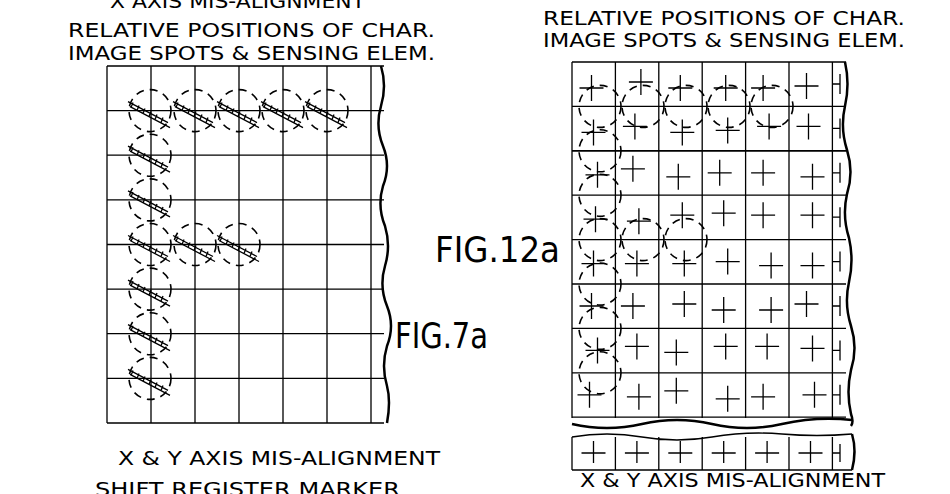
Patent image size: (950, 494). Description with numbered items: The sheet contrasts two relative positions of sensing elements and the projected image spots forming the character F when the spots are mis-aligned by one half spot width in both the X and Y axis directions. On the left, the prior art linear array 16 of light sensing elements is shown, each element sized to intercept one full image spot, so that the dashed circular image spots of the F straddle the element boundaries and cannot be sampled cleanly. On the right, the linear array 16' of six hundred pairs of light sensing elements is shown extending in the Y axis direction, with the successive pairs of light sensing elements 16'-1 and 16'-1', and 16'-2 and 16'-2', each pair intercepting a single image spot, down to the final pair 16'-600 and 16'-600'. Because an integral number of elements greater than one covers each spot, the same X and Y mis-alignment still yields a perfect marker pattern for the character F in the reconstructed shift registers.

In FIG. 7a, the linear array of light sensing elements 16 is at (216, 234).
In FIG. 12a, the linear array of pairs of light sensing elements 16' is at (665, 229).
In FIG. 12a, the light sensing element 16'-1 is at (659, 82).
In FIG. 12a, the light sensing element 16'-1' is at (635, 105).
In FIG. 12a, the light sensing element 16'-2 is at (659, 124).
In FIG. 12a, the light sensing element 16'-2' is at (662, 137).
In FIG. 12a, the light sensing element 16'-600 is at (670, 448).
In FIG. 12a, the light sensing element 16'-600' is at (662, 455).